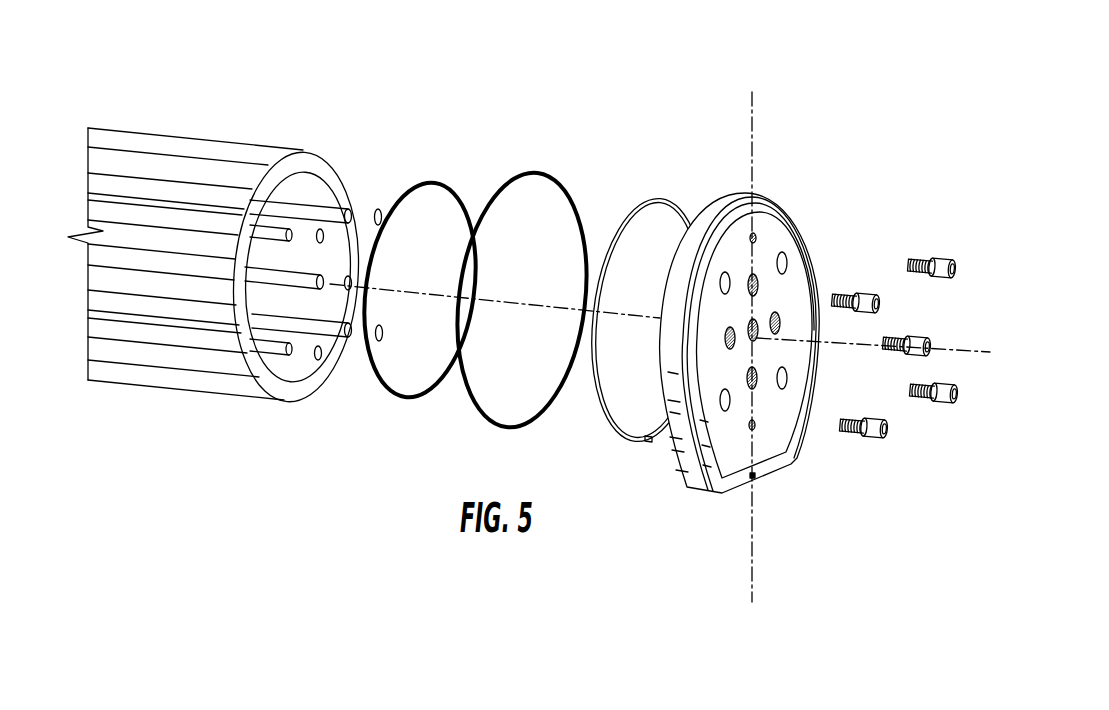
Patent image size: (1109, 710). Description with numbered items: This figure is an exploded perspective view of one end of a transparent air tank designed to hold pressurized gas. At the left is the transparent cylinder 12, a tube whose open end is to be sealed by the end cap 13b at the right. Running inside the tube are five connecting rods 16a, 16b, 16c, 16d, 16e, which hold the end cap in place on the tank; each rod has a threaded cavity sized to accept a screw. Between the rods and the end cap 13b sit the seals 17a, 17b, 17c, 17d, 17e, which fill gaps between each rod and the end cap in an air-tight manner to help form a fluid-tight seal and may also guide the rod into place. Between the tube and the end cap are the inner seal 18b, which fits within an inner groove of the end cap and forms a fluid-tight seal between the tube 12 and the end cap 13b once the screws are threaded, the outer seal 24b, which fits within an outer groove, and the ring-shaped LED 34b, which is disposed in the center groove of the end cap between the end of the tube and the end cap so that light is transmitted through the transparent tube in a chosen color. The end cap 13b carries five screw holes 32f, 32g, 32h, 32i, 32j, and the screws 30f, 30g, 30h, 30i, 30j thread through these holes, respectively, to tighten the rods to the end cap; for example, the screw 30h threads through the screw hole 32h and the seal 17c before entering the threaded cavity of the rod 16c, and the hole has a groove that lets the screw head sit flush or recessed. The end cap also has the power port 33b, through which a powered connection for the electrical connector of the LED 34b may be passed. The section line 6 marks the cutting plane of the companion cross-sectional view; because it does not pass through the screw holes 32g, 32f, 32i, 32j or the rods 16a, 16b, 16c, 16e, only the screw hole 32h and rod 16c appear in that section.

The transparent cylinder 12 is at (282, 148).
The connecting rod 16a is at (187, 192).
The connecting rod 16b is at (222, 213).
The connecting rod 16c is at (140, 263).
The connecting rod 16d is at (178, 335).
The connecting rod 16e is at (215, 313).
The seal 17a is at (378, 208).
The seal 17b is at (321, 229).
The seal 17c is at (352, 283).
The seal 17d is at (318, 360).
The seal 17e is at (381, 341).
The inner seal 18b is at (426, 178).
The outer seal 24b is at (528, 172).
The LED 34b is at (646, 192).
The end cap 13b is at (742, 188).
The screw hole 32f is at (791, 251).
The screw hole 32g is at (722, 270).
The screw hole 32h is at (750, 342).
The screw hole 32i is at (720, 413).
The screw hole 32j is at (790, 381).
The power port 33b is at (759, 484).
The screw 30f is at (944, 258).
The screw 30g is at (862, 299).
The screw 30h is at (912, 340).
The screw 30i is at (868, 442).
The screw 30j is at (942, 410).
The section line 6 is at (752, 92).